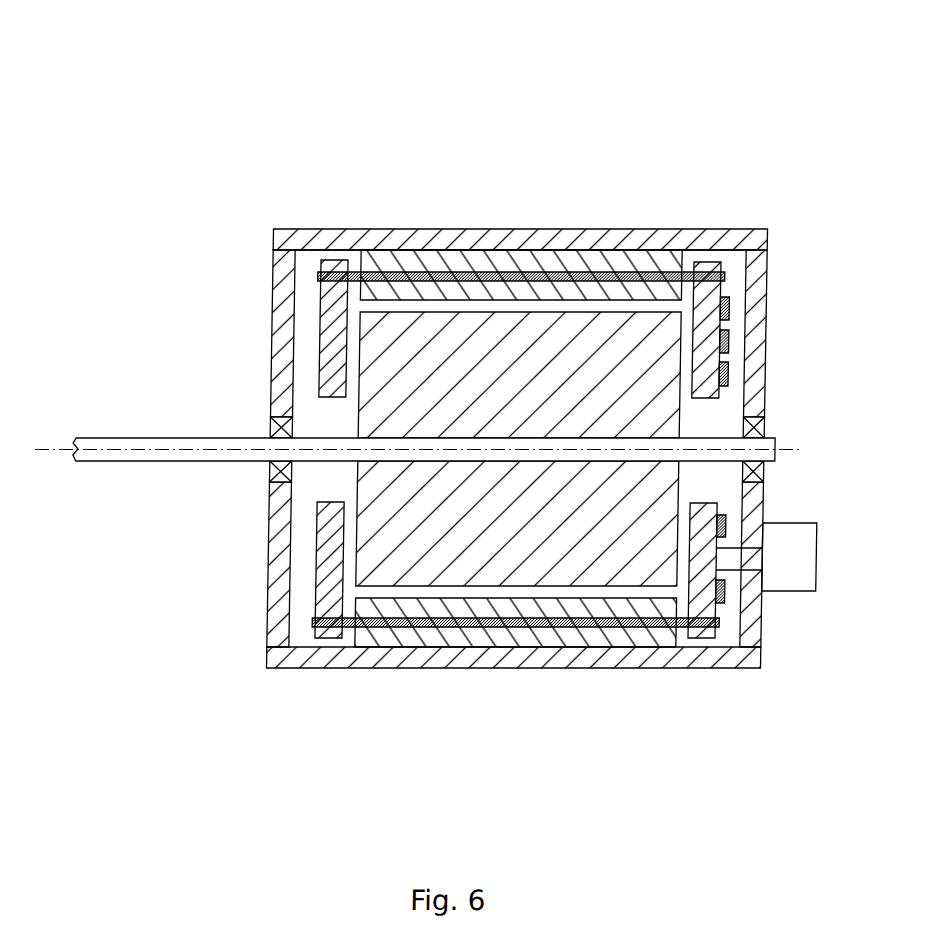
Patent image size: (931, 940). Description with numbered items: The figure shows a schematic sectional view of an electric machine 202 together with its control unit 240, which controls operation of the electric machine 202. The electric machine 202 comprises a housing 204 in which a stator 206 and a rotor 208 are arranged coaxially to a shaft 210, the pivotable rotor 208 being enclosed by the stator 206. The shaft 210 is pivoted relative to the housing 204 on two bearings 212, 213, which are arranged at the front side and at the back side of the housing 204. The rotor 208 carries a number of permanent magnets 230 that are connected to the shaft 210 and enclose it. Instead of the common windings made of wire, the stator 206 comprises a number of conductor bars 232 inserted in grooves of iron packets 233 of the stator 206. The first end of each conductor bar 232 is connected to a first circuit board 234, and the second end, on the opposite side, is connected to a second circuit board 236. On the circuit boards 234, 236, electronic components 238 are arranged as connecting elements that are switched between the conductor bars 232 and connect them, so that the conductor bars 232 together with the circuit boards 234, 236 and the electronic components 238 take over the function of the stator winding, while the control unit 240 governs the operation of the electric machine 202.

The electric machine 202 is at (762, 163).
The housing 204 is at (524, 240).
The stator 206 is at (384, 240).
The rotor 208 is at (641, 301).
The shaft 210 is at (133, 445).
The bearing 212 is at (269, 428).
The bearing 213 is at (765, 428).
The permanent magnets 230 is at (478, 327).
The conductor bars 232 is at (443, 262).
The iron packets 233 is at (574, 268).
The first circuit board 234 is at (704, 262).
The second circuit board 236 is at (324, 258).
The electronic components 238 is at (727, 372).
The control unit 240 is at (780, 568).